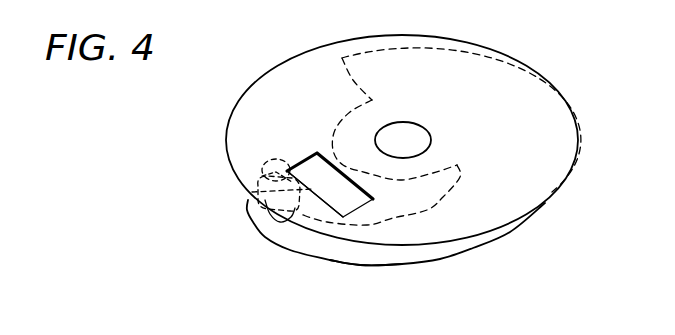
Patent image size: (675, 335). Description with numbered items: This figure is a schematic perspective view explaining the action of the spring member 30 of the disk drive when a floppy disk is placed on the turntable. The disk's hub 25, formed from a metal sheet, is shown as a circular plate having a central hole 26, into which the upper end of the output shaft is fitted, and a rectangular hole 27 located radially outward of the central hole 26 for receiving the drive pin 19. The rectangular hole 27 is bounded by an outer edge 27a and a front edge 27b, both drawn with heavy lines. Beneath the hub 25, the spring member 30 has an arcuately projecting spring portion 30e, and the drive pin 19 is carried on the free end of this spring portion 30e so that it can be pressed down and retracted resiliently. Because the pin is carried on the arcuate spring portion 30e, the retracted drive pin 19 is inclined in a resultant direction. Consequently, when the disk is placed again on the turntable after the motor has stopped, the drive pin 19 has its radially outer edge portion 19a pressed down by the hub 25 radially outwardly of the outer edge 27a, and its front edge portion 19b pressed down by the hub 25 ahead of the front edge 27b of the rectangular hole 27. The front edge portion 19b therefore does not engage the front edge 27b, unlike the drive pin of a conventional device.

The drive pin 19 is at (270, 217).
The radially outer edge portion 19a is at (252, 192).
The front edge portion 19b is at (270, 160).
The hub 25 is at (536, 70).
The central hole 26 is at (414, 133).
The rectangular hole 27 is at (363, 199).
The outer edge 27a is at (328, 207).
The front edge 27b is at (310, 156).
The spring member 30 is at (473, 246).
The arcuate spring portion 30e is at (361, 265).